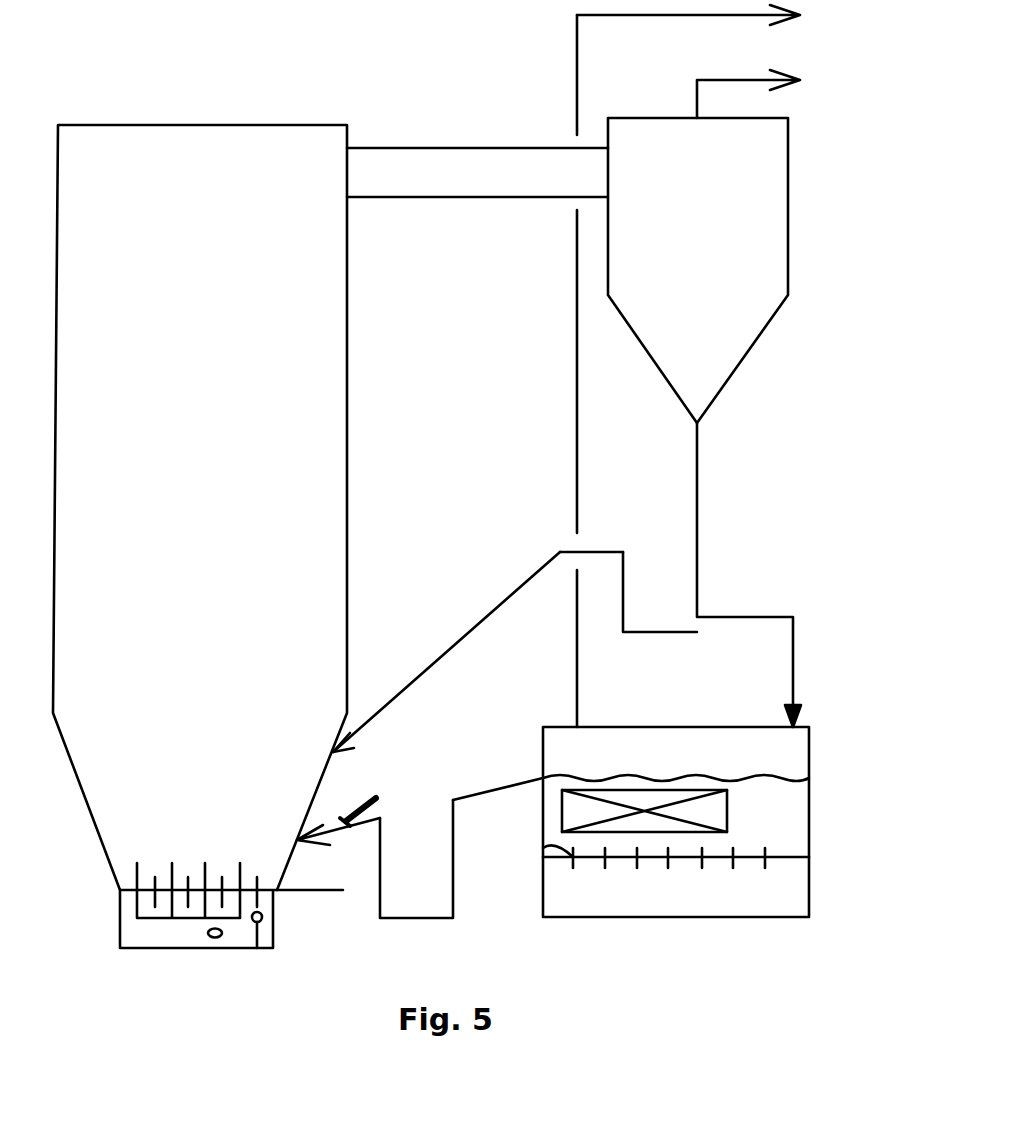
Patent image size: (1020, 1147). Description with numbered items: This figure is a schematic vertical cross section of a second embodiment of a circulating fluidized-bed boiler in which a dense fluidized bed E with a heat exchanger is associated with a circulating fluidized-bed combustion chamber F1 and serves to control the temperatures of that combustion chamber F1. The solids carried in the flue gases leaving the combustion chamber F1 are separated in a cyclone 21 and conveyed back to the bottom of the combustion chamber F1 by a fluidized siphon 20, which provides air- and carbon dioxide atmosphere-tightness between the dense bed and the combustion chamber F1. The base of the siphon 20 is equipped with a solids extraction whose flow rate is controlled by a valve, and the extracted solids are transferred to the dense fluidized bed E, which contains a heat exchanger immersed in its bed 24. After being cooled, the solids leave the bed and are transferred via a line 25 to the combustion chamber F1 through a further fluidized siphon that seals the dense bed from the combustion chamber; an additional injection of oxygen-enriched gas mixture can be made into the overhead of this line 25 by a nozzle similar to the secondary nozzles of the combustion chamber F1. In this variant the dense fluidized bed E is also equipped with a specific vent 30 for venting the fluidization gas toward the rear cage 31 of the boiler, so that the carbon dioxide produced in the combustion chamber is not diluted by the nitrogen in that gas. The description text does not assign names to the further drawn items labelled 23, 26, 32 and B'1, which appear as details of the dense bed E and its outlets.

The circulating fluidized-bed combustion chamber F1 is at (207, 445).
The fluidized siphon 20 is at (697, 515).
The cyclone 21 is at (788, 221).
The gas distributor / perforated plate 23 is at (800, 850).
The bed 24 is at (795, 797).
The line 25 is at (508, 790).
The solids outlet pipe 26 is at (453, 890).
The vent 30 is at (577, 398).
The rear cage 31 is at (736, 17).
The cyclone gas outlet 32 is at (750, 80).
The dense fluidized bed E is at (597, 917).
The fluidizing gas inlet B'1 is at (524, 847).